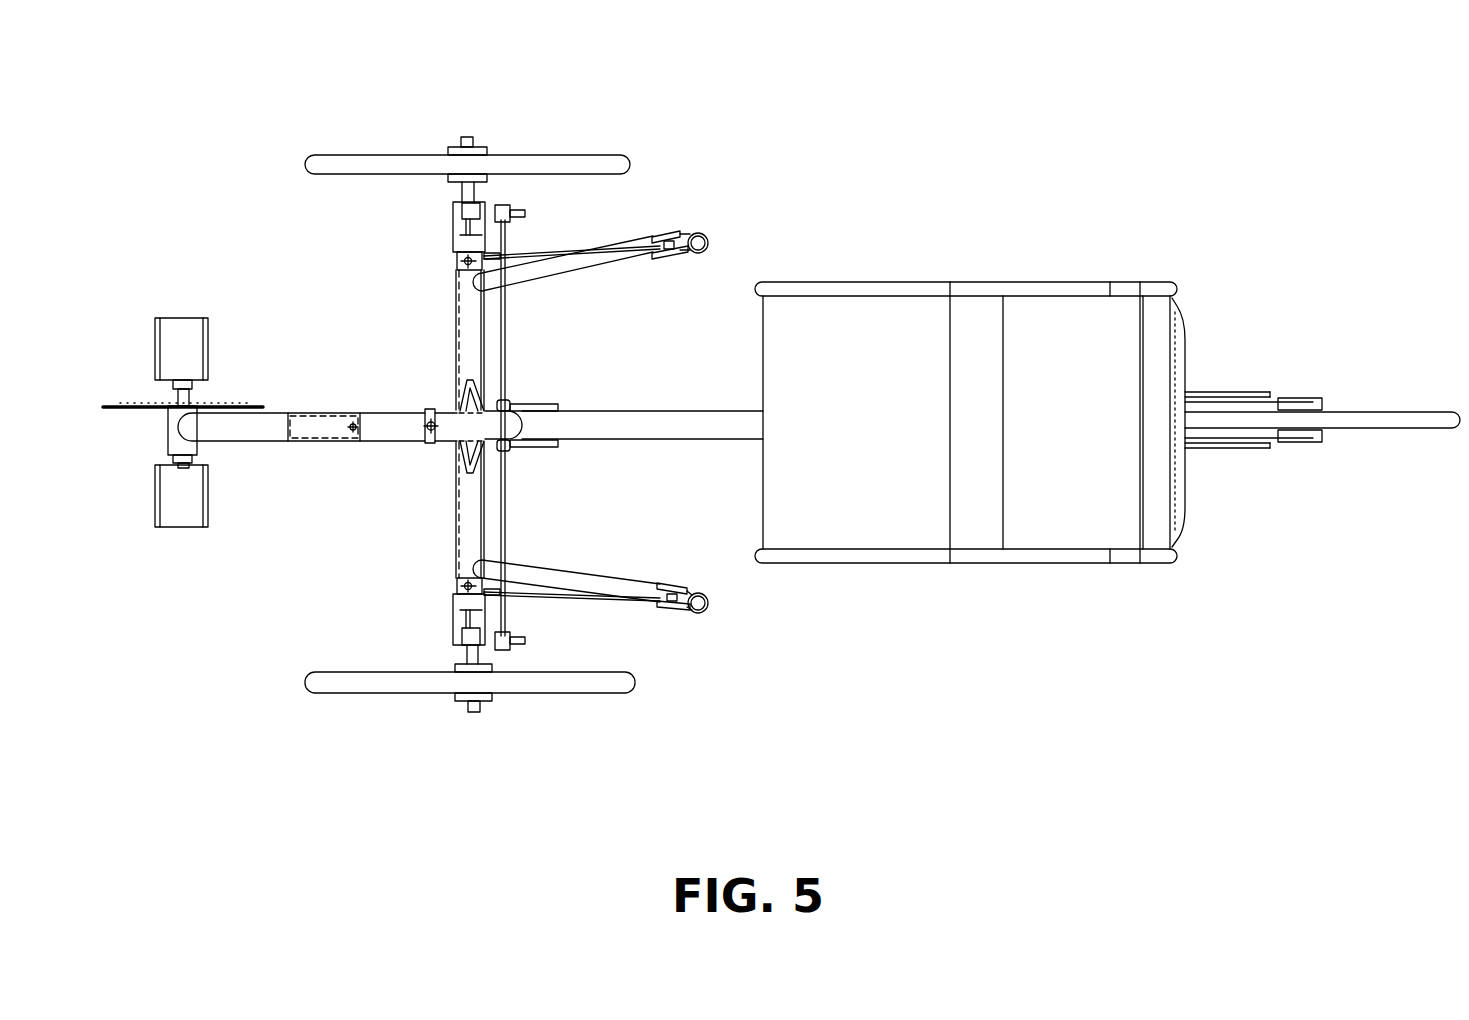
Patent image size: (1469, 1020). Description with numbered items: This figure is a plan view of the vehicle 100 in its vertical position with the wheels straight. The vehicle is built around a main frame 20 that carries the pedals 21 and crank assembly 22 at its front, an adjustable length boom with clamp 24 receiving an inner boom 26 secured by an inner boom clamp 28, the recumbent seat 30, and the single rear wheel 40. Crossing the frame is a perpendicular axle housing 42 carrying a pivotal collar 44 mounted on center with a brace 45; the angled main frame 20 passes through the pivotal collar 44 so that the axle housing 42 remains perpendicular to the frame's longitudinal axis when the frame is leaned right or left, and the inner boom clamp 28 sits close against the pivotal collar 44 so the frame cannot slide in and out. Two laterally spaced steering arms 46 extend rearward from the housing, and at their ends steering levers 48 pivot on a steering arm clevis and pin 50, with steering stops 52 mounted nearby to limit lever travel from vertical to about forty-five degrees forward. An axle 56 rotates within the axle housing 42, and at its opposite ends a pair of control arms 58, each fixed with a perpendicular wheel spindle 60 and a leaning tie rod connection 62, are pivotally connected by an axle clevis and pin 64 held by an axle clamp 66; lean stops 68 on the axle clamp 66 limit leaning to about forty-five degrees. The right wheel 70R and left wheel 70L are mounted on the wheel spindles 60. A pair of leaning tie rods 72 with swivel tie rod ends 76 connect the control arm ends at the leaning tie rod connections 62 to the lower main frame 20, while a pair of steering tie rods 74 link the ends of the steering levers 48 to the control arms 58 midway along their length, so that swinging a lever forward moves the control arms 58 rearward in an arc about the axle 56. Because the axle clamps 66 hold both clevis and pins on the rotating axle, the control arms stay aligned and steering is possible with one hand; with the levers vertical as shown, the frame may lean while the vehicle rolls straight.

The vehicle 100 is at (1088, 180).
The main frame 20 is at (680, 408).
The pedals 21 is at (180, 318).
The crank assembly 22 is at (188, 382).
The adjustable length boom with clamp 24 is at (305, 445).
The inner boom 26 is at (385, 445).
The inner boom clamp 28 is at (427, 408).
The recumbent seat 30 is at (858, 563).
The rear wheel 40 is at (1378, 411).
The axle housing 42 is at (455, 338).
The pivotal collar 44 is at (432, 445).
The brace 45 is at (465, 458).
The steering arms 46 is at (570, 277).
The steering levers 48 is at (709, 241).
The steering arm clevis and pin 50 is at (683, 236).
The steering stops 52 is at (655, 240).
The axle 56 is at (468, 530).
The control arms 58 is at (471, 212).
The wheel spindles 60 is at (460, 195).
The leaning tie rod connections 62 is at (512, 217).
The axle clevis and pin 64 is at (455, 222).
The axle clamp 66 is at (462, 262).
The lean stops 68 is at (500, 578).
The right wheel 70R is at (352, 152).
The left wheel 70L is at (535, 696).
The leaning tie rods 72 is at (507, 300).
The steering tie rods 74 is at (560, 253).
The swivel tie rod ends 76 is at (508, 214).